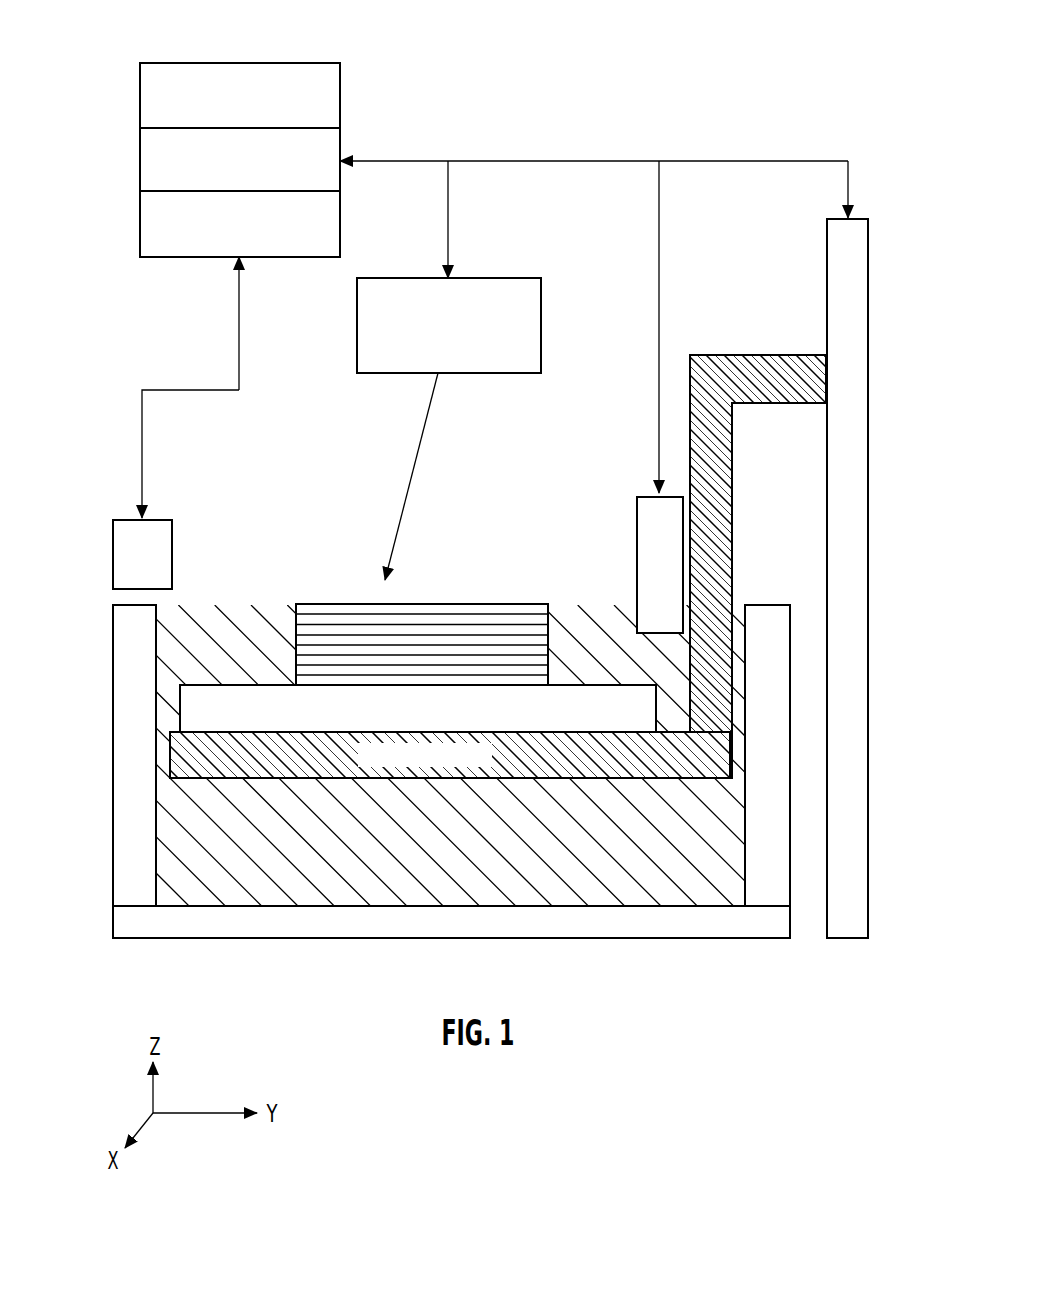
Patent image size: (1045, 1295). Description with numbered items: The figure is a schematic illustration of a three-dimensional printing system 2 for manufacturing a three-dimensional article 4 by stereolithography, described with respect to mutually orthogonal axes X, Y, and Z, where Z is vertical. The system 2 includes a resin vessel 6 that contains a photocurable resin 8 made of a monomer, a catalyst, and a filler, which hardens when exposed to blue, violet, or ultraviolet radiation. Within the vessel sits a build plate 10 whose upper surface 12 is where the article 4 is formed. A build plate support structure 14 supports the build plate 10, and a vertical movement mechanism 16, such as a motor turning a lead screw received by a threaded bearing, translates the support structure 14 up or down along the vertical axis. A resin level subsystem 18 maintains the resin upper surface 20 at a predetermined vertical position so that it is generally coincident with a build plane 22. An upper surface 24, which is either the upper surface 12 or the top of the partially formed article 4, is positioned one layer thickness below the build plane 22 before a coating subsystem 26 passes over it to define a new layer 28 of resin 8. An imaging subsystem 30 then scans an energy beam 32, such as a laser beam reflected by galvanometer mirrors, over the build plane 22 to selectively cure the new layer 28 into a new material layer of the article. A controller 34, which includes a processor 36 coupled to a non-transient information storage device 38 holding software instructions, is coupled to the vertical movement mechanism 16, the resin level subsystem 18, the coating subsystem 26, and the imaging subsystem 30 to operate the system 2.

The three-dimensional printing system 2 is at (593, 78).
The 3D article 4 is at (453, 604).
The resin vessel 6 is at (113, 749).
The photocurable resin 8 is at (512, 713).
The build plate 10 is at (578, 697).
The upper surface 12 is at (223, 685).
The build plate support structure 14 is at (732, 538).
The vertical movement mechanism 16 is at (868, 322).
The resin level subsystem 18 is at (682, 523).
The resin upper surface 20 is at (512, 713).
The build plane 22 is at (190, 605).
The upper surface 24 is at (530, 604).
The coating subsystem 26 is at (113, 543).
The new layer 28 is at (353, 604).
The imaging subsystem 30 is at (541, 312).
The energy beam 32 is at (420, 457).
The controller 34 is at (465, 253).
The processor 36 is at (140, 158).
The non-transient information storage device 38 is at (140, 217).